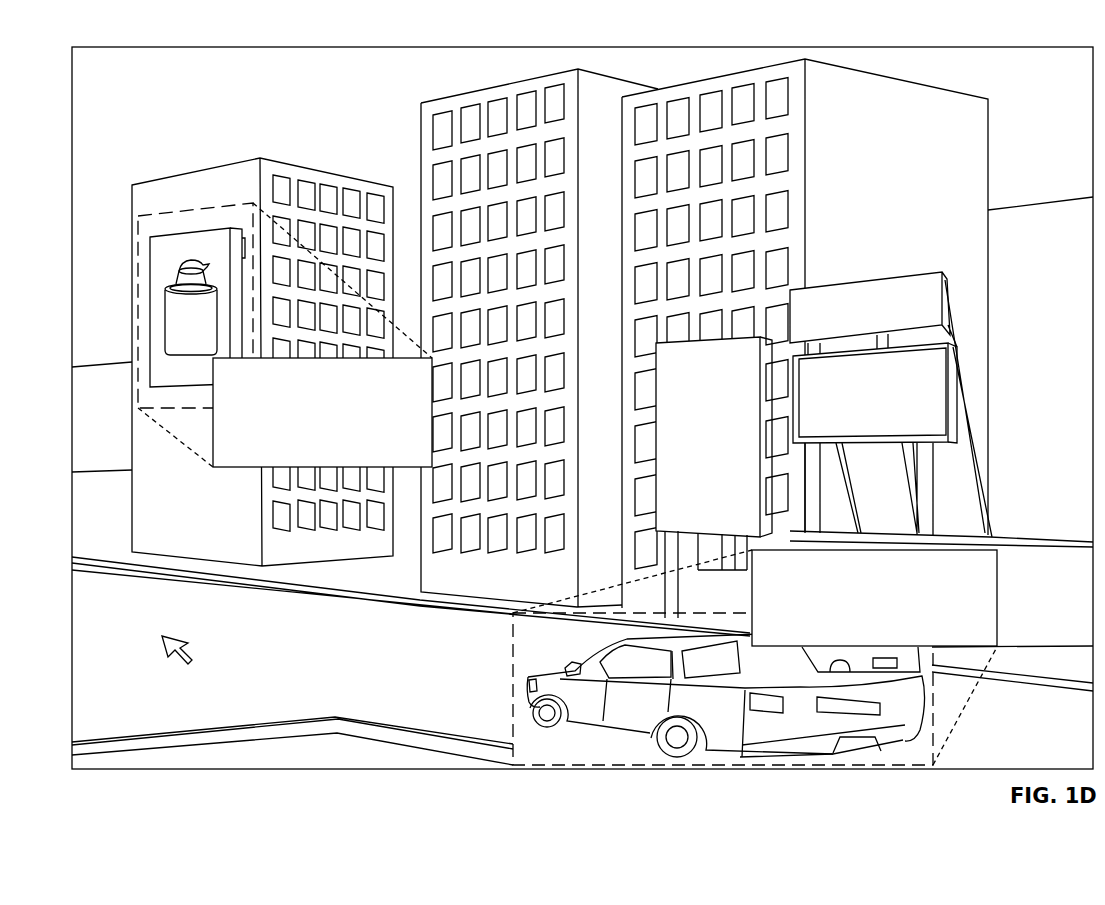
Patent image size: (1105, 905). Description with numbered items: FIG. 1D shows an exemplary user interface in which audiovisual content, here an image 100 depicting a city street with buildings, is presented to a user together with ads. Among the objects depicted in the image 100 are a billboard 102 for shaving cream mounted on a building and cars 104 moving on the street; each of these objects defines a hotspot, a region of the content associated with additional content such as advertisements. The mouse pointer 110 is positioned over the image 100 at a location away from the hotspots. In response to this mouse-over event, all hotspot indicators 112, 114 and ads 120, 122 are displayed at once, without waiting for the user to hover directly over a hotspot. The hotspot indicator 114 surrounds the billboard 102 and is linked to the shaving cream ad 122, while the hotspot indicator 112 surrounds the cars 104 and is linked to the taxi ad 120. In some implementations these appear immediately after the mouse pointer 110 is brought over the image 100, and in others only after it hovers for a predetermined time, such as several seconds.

The image 100 is at (131, 87).
The billboard 102 is at (187, 235).
The cars 104 is at (528, 659).
The mouse pointer 110 is at (193, 655).
The hotspot indicator 112 is at (933, 725).
The hotspot indicator 114 is at (157, 410).
The ad 120 is at (998, 617).
The ad 122 is at (227, 467).